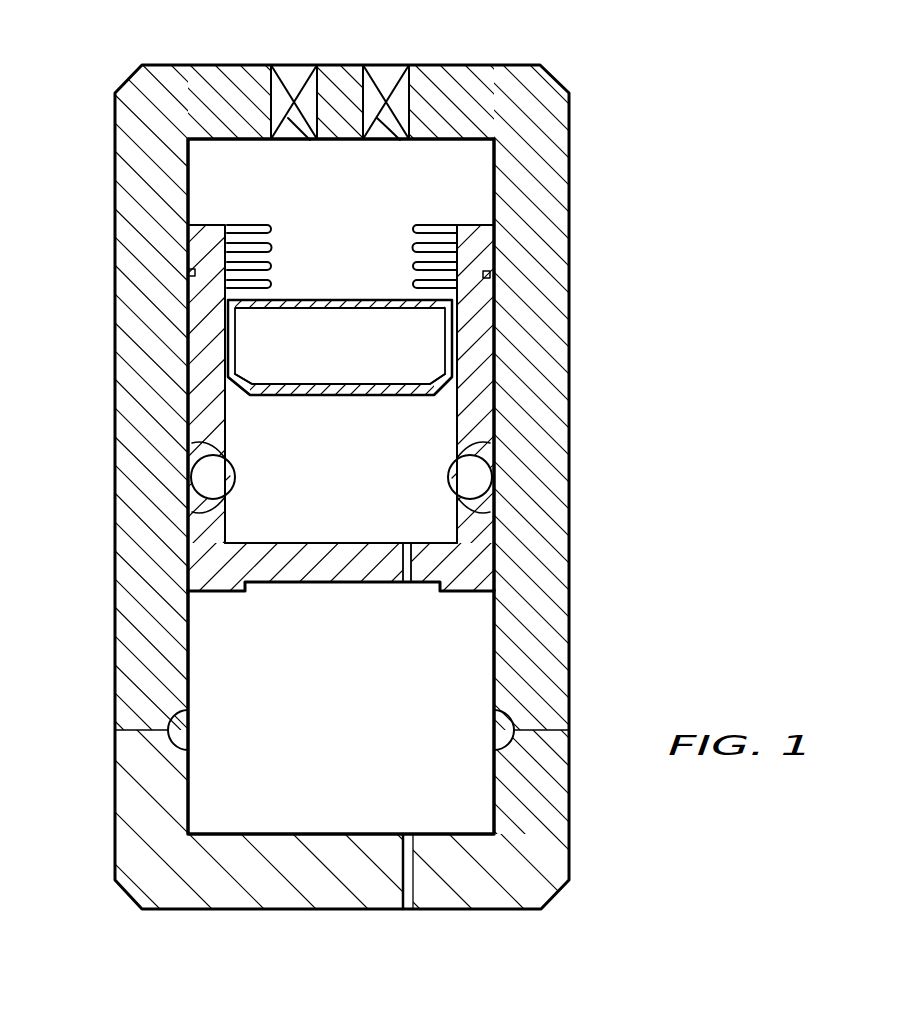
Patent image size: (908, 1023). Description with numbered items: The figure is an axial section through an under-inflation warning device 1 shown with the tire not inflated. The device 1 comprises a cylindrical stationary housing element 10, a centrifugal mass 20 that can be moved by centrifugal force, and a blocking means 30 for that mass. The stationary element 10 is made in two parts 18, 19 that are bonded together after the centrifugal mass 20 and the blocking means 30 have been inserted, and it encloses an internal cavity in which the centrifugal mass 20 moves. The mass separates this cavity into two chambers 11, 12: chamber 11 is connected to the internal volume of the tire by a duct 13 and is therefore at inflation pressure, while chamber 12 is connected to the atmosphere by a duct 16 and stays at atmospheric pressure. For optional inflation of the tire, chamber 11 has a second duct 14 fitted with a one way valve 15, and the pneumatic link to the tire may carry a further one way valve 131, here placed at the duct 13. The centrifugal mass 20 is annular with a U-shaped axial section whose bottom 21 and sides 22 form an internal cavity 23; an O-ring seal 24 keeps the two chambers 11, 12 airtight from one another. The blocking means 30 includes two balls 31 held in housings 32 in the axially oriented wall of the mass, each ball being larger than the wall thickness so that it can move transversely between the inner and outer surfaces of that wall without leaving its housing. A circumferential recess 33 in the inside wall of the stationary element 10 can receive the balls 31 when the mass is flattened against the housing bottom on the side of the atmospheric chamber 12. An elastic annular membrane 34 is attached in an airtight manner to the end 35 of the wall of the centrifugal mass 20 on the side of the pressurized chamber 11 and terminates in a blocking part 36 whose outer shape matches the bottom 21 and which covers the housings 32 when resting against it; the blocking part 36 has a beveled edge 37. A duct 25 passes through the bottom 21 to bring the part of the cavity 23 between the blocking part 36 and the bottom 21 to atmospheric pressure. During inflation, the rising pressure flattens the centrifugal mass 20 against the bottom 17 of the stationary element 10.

The under-inflation warning device 1 is at (112, 72).
The stationary housing element 10 is at (132, 226).
The chamber 11 is at (202, 173).
The chamber 12 is at (213, 672).
The duct 13 is at (377, 82).
The one way valve 131 is at (400, 140).
The second duct 14 is at (310, 140).
The one way valve 15 is at (285, 82).
The duct 16 is at (408, 900).
The bottom of stationary element 17 is at (280, 893).
The part of stationary element 18 is at (540, 207).
The part of stationary element 19 is at (553, 832).
The centrifugal mass 20 is at (200, 383).
The bottom 21 is at (332, 568).
The sides 22 is at (470, 343).
The cavity 23 is at (448, 418).
The O-ring seal 24 is at (491, 276).
The duct 25 is at (406, 592).
The blocking means 30 is at (352, 300).
The balls 31 is at (478, 473).
The housings 32 is at (488, 508).
The circumferential recess 33 is at (508, 726).
The elastic annular membrane 34 is at (415, 258).
The end of the wall 35 is at (478, 245).
The blocking part 36 is at (440, 390).
The beveled edge 37 is at (238, 390).